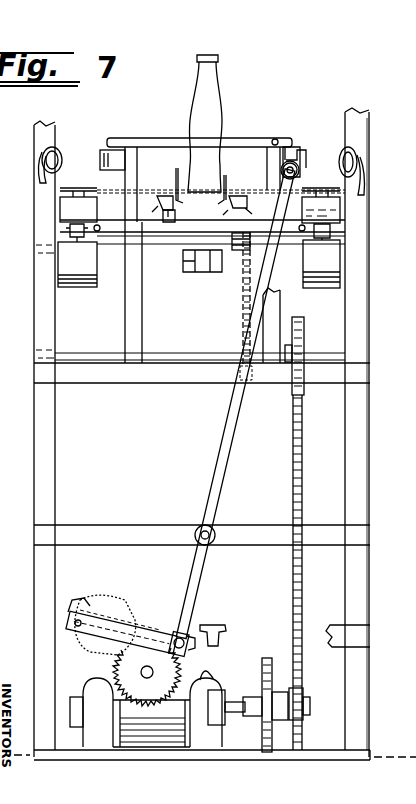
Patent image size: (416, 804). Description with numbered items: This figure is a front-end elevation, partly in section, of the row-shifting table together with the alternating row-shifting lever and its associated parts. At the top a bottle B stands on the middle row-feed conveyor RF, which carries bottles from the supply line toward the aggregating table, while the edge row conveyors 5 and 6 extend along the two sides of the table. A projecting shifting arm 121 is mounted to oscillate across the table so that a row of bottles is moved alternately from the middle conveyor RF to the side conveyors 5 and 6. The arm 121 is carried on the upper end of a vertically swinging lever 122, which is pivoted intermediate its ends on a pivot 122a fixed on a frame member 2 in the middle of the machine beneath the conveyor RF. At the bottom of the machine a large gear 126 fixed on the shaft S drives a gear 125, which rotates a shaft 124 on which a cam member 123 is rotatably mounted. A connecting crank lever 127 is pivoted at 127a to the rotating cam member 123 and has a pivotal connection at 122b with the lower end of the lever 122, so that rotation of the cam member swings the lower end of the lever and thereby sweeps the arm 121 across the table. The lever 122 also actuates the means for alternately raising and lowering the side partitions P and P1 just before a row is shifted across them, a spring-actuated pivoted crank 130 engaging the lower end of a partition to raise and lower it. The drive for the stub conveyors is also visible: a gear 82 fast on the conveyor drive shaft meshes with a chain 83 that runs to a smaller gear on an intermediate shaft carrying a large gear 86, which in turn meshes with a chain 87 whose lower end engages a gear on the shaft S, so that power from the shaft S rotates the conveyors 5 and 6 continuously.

The frame member 2 is at (362, 438).
The edge row conveyor 5 is at (76, 190).
The edge row conveyor 6 is at (330, 190).
The side partition P is at (170, 180).
The side partition P1 is at (230, 182).
The bottle B is at (205, 123).
The row-feed conveyor RF is at (200, 190).
The shifting arm 121 is at (299, 158).
The spring-actuated pivoted crank 130 is at (166, 216).
The gear 82 is at (238, 263).
The chain 83 is at (242, 309).
The large gear 86 is at (302, 320).
The chain 87 is at (302, 417).
The vertically swinging lever 122 is at (213, 502).
The pivot 122a is at (212, 540).
The pivotal connection 122b is at (191, 633).
The cam member 123 is at (83, 610).
The shaft 124 is at (90, 622).
The gear 125 is at (119, 607).
The connecting crank lever 127 is at (121, 626).
The pivot 127a is at (74, 622).
The shaft S is at (140, 670).
The large gear 126 is at (176, 670).